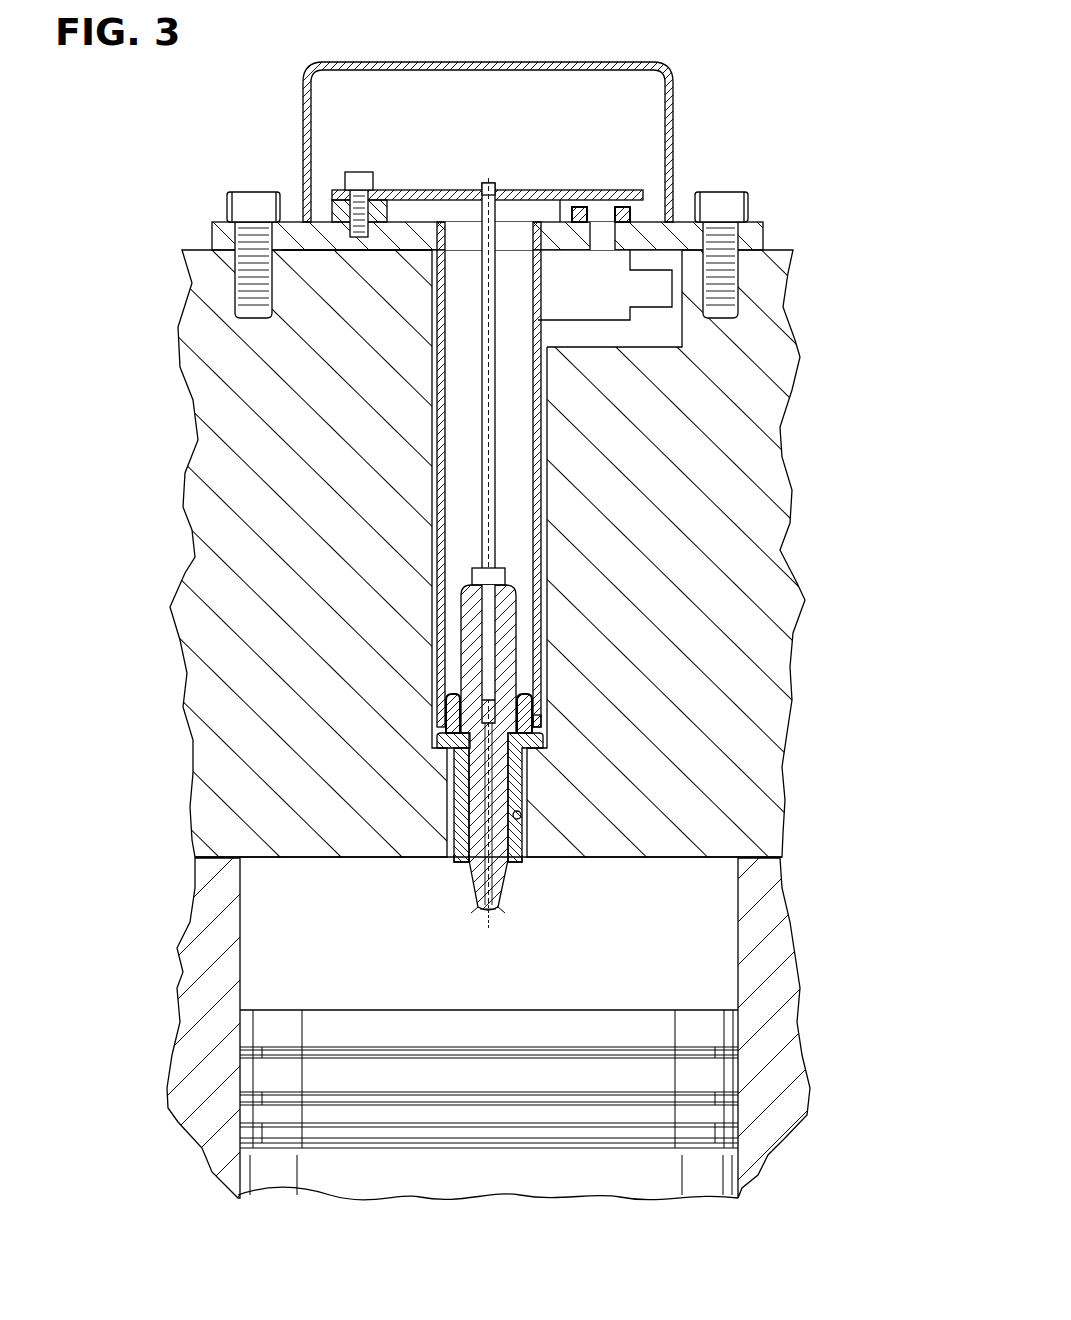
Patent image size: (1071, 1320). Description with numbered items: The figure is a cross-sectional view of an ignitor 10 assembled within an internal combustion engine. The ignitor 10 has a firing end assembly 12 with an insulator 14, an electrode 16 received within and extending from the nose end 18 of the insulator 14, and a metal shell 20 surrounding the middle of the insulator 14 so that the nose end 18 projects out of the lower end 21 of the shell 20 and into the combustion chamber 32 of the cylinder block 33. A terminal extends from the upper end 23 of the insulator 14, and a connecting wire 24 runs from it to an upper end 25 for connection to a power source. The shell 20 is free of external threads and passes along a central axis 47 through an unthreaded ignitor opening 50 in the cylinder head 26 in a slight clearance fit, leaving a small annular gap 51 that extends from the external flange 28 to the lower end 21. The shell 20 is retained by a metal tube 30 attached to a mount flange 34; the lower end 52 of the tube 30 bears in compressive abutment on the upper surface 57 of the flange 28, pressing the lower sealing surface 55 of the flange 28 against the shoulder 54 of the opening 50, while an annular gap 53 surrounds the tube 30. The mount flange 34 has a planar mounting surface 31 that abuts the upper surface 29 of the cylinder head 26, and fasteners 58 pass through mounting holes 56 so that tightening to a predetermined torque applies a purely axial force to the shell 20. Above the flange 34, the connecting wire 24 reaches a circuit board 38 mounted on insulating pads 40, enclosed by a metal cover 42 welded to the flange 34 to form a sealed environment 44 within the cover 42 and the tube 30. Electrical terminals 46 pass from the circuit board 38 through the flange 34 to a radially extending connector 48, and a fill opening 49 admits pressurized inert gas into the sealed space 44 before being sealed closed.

The ignitor 10 is at (590, 492).
The firing end assembly 12 is at (527, 112).
The insulator 14 is at (466, 642).
The electrode 16 is at (490, 915).
The nose end 18 is at (478, 885).
The metal shell 20 is at (520, 770).
The lower end of the shell 21 is at (462, 870).
The upper end of the insulator 23 is at (475, 575).
The connecting wire 24 is at (482, 430).
The upper end of the connecting wire 25 is at (485, 183).
The cylinder head 26 is at (770, 352).
The external flange 28 is at (437, 745).
The upper surface of the cylinder head 29 is at (416, 225).
The metal tube 30 is at (538, 372).
The mounting surface 31 is at (315, 252).
The combustion chamber 32 is at (672, 942).
The cylinder block 33 is at (760, 905).
The mount flange 34 is at (212, 232).
The circuit board 38 is at (415, 190).
The insulating pads 40 is at (332, 210).
The metal cover 42 is at (605, 62).
The sealed environment 44 is at (553, 82).
The electrical terminals 46 is at (622, 210).
The central axis 47 is at (487, 388).
The connector 48 is at (675, 290).
The fill opening 49 is at (590, 262).
The ignitor opening 50 is at (521, 815).
The annular gap 51 is at (520, 862).
The lower end of the tube 52 is at (447, 725).
The annular gap about the tube 53 is at (542, 610).
The shoulder 54 is at (533, 722).
The sealing surface 55 is at (455, 790).
The mounting holes 56 is at (725, 240).
The upper surface of the flange 57 is at (533, 727).
The fasteners 58 is at (270, 196).